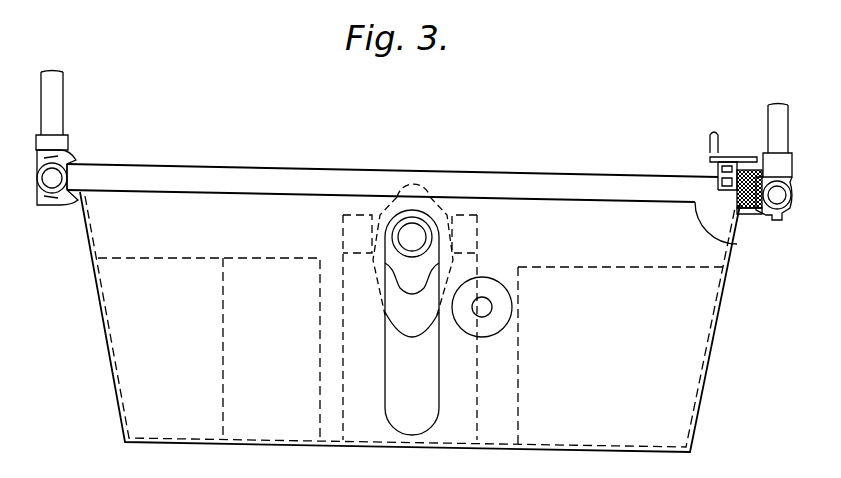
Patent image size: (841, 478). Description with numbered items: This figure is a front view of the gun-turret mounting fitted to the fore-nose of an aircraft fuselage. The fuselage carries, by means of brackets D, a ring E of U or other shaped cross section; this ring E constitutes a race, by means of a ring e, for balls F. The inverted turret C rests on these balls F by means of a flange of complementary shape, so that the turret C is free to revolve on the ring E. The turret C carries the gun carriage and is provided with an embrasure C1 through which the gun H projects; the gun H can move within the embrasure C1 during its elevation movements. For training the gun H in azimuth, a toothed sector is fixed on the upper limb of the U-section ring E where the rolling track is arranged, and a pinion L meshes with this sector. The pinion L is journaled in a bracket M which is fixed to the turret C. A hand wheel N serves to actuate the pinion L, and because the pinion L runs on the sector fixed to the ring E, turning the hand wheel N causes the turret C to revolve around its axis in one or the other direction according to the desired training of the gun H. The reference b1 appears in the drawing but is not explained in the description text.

The rod / beam end b1 is at (66, 151).
The bracket D is at (53, 204).
The inverted turret C is at (692, 360).
The gun H is at (420, 221).
The embrasure C1 is at (386, 388).
The ring E is at (760, 211).
The pinion L is at (717, 170).
The hand wheel N is at (747, 156).
The balls F is at (737, 208).
The bracket M is at (723, 187).
The ring e is at (747, 214).